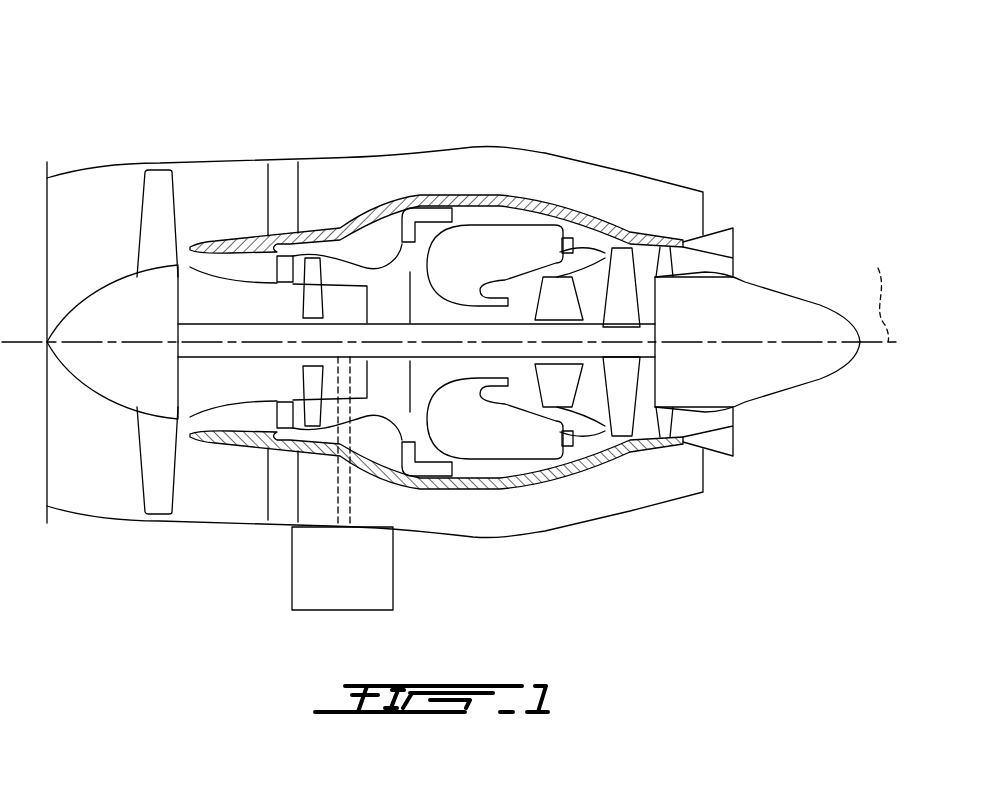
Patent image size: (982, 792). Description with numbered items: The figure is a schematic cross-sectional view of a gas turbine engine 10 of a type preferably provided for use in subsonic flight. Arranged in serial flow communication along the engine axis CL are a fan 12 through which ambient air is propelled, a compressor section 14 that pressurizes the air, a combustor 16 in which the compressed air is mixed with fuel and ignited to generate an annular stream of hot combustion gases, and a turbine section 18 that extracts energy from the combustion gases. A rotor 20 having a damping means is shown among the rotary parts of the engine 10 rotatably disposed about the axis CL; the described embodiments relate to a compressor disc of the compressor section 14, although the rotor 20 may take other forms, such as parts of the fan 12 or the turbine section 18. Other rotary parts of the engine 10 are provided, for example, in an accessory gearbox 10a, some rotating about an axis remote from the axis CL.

The gas turbine engine 10 is at (612, 124).
The accessory gearbox 10a is at (312, 578).
The fan 12 is at (153, 452).
The compressor section 14 is at (357, 277).
The combustor 16 is at (495, 238).
The turbine section 18 is at (590, 392).
The rotor 20 is at (313, 260).